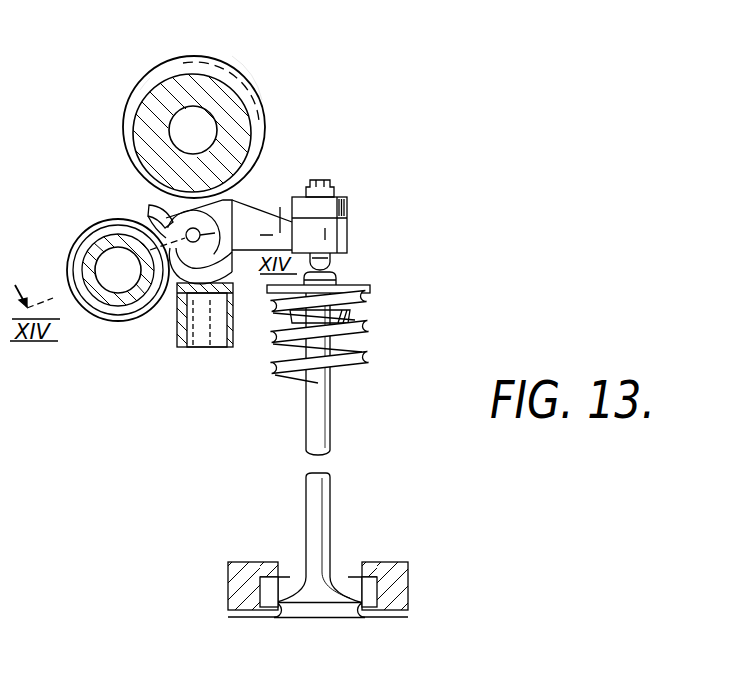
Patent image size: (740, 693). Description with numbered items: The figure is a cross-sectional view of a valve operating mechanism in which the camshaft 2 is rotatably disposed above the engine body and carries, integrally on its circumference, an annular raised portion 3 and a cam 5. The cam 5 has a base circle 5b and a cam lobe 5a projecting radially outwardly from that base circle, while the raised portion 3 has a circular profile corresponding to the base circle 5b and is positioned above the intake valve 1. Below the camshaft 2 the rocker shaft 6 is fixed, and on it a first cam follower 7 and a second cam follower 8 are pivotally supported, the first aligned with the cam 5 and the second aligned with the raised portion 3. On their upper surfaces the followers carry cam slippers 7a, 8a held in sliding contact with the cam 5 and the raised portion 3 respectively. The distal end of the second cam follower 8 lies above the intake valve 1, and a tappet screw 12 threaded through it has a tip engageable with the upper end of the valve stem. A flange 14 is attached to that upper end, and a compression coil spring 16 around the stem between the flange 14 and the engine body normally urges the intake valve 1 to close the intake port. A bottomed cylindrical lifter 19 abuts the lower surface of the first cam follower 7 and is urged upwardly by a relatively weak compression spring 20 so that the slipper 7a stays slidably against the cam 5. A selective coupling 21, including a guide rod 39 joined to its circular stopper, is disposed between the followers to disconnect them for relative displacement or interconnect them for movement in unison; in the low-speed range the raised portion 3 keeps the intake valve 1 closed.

The intake valve 1 is at (330, 440).
The camshaft 2 is at (135, 120).
The annular raised portion 3 is at (262, 108).
The cam 5 is at (184, 55).
The cam lobe 5a is at (232, 53).
The base circle 5b is at (139, 90).
The rocker shaft 6 is at (102, 242).
The first cam follower 7 is at (163, 223).
The cam slipper 7a is at (187, 200).
The second cam follower 8 is at (172, 297).
The cam slipper 8a is at (200, 143).
The tappet screw 12 is at (316, 177).
The flange 14 is at (371, 292).
The compression coil spring 16 is at (371, 358).
The bottomed cylindrical lifter 19 is at (233, 318).
The compression spring 20 is at (183, 343).
The selective coupling 21 is at (170, 203).
The guide rod 39 is at (224, 257).